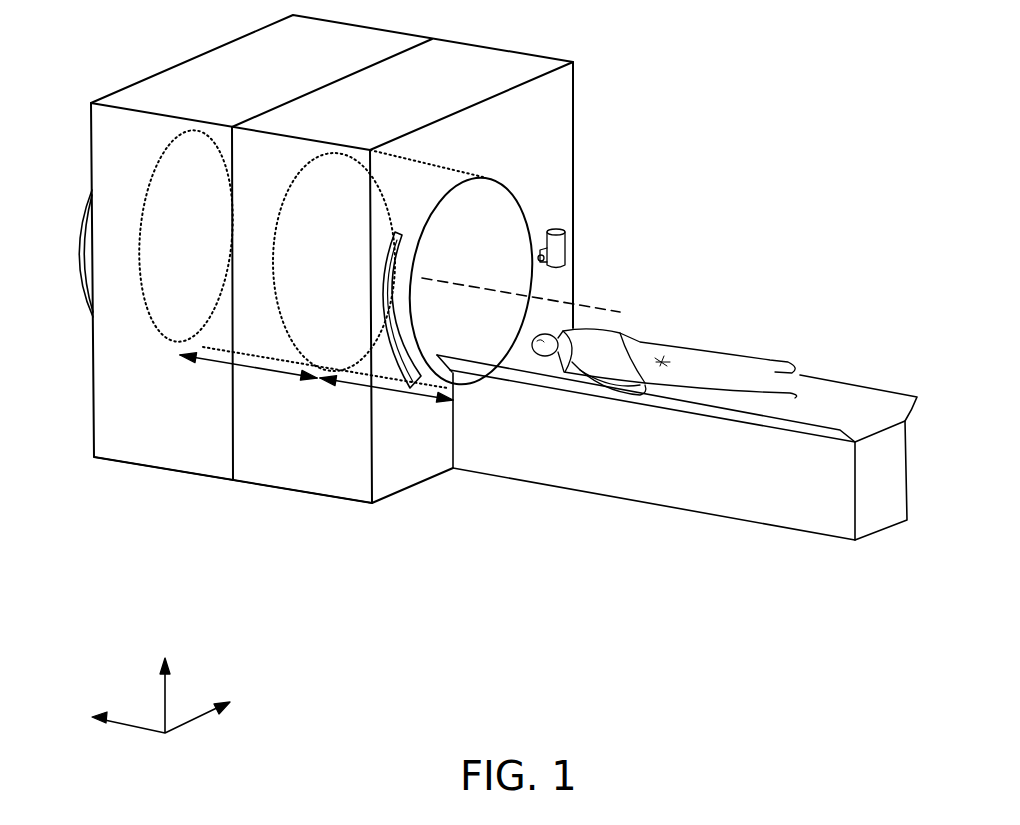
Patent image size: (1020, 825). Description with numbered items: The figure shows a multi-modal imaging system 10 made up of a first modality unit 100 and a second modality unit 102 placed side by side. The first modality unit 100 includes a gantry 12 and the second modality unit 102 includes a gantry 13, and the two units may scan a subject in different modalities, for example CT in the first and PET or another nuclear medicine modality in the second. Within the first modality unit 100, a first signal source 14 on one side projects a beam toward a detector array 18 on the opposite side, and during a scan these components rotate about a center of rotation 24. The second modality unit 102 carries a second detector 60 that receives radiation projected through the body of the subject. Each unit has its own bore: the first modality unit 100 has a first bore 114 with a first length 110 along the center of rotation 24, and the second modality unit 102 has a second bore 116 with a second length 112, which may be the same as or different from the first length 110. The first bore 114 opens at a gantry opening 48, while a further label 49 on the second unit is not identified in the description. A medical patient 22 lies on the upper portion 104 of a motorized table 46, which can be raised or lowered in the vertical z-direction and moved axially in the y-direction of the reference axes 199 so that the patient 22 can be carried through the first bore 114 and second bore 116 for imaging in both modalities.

The multi-modal imaging system 10 is at (445, 490).
The gantry 12 is at (552, 112).
The gantry 13 is at (170, 92).
The first signal source 14 is at (555, 230).
The detector array 18 is at (405, 243).
The medical patient 22 is at (608, 337).
The center of rotation 24 is at (585, 308).
The table 46 is at (737, 510).
The gantry opening 48 is at (510, 185).
The rear bore position 49 is at (152, 187).
The second detector 60 is at (82, 268).
The first modality unit 100 is at (325, 468).
The second modality unit 102 is at (177, 453).
The upper portion 104 is at (921, 412).
The first length 110 is at (360, 393).
The second length 112 is at (222, 363).
The first bore 114 is at (418, 163).
The second bore 116 is at (273, 143).
The reference axes 199 is at (222, 652).